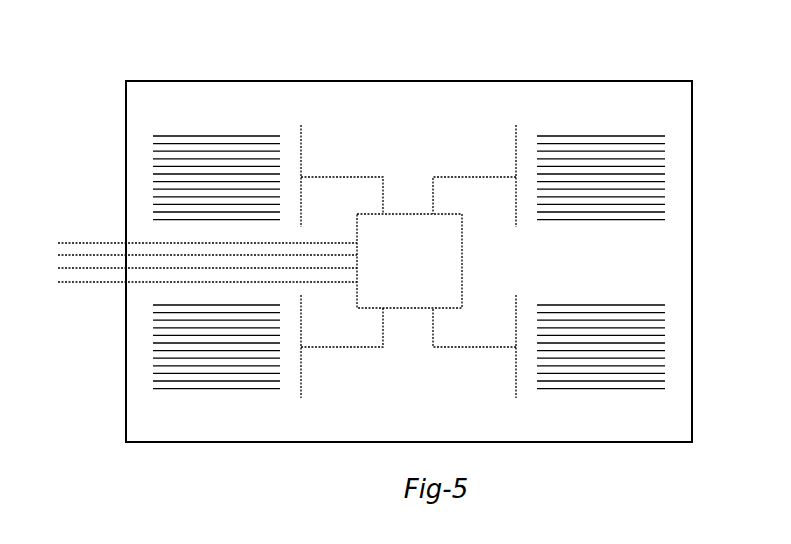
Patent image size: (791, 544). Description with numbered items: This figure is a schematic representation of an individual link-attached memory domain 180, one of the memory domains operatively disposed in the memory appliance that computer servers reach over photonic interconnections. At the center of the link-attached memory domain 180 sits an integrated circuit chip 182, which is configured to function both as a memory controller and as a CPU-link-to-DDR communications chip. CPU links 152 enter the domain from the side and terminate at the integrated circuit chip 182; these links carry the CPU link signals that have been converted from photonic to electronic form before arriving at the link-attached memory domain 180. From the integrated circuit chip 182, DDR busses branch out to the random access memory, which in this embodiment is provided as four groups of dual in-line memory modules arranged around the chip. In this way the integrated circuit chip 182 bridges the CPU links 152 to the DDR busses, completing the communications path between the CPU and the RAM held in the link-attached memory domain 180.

The CPU links 152 is at (80, 284).
The link-attached memory domain 180 is at (271, 446).
The integrated circuit chip 182 is at (400, 268).